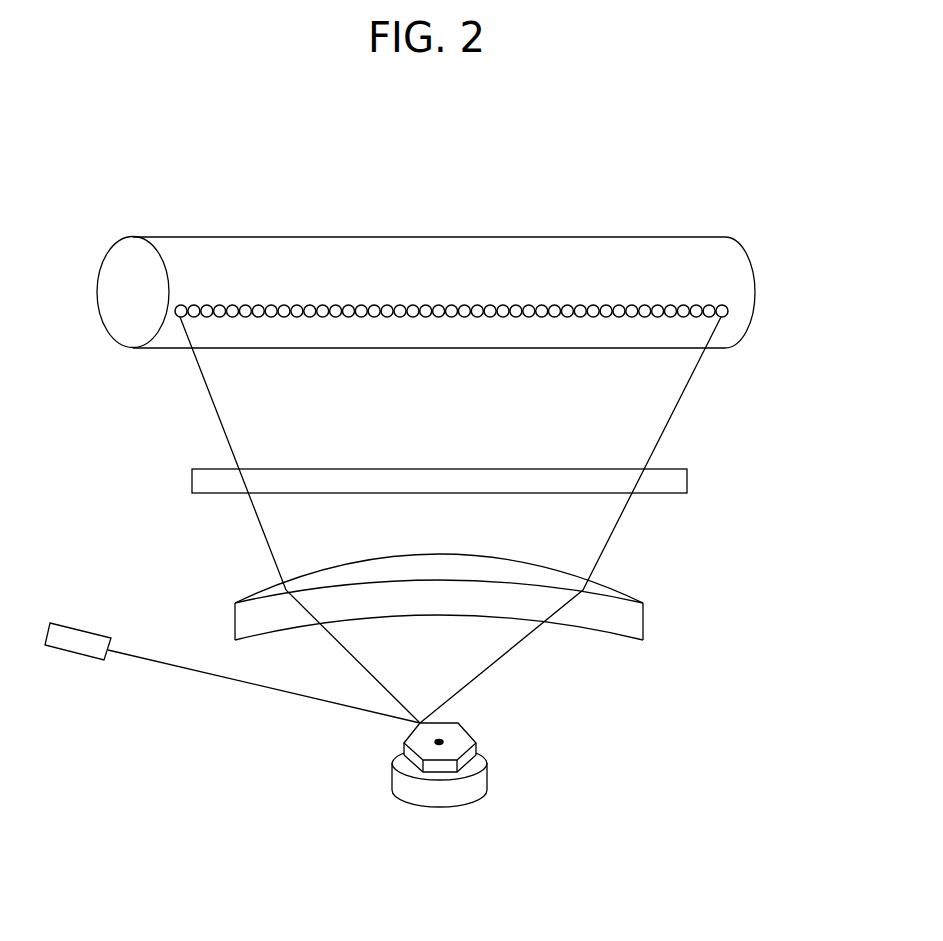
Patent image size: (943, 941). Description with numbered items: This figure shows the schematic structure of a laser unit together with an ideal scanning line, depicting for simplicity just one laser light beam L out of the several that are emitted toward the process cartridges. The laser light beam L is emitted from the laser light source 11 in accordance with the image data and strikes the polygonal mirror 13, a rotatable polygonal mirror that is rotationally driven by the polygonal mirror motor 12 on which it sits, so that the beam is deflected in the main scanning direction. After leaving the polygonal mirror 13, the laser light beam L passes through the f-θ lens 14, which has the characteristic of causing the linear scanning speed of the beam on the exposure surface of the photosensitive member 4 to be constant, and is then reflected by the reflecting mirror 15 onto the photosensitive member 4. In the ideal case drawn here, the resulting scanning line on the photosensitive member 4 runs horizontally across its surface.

The photosensitive member 4 is at (733, 272).
The reflecting mirror 15 is at (677, 481).
The f-θ lens 14 is at (631, 620).
The polygonal mirror 13 is at (455, 742).
The polygonal mirror motor 12 is at (465, 792).
The laser light source 11 is at (85, 658).
The laser light beam L is at (253, 685).